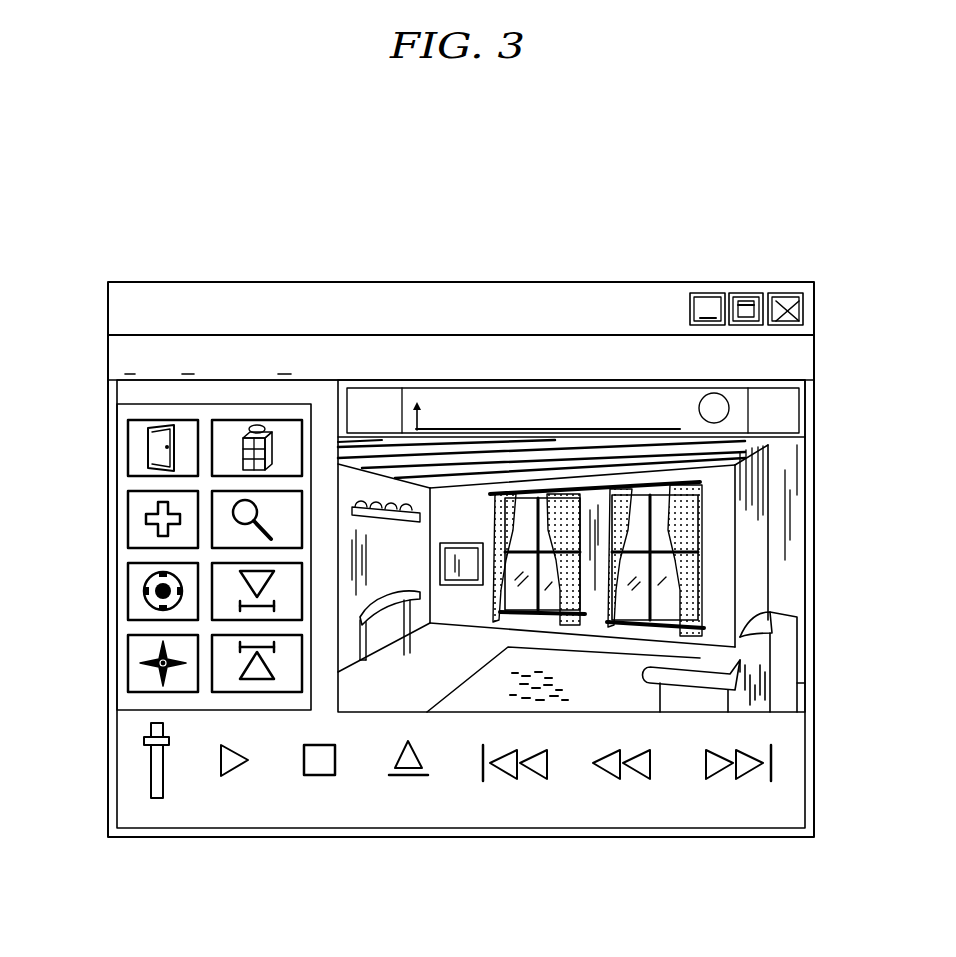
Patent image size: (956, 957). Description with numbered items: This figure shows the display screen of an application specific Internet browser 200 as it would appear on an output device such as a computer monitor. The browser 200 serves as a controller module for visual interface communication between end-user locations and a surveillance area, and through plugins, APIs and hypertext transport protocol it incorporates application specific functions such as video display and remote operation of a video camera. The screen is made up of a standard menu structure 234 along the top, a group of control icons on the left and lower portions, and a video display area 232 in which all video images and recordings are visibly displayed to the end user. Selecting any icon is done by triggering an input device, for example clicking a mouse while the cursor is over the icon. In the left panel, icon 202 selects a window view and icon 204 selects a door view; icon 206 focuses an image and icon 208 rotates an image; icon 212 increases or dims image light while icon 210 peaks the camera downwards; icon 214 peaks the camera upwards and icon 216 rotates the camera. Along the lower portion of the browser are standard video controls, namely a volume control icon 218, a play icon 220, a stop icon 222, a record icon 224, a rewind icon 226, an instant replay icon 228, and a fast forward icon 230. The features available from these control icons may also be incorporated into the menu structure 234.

The application specific Internet browser 200 is at (464, 232).
The window view icon 202 is at (228, 418).
The door view icon 204 is at (128, 432).
The focus icon 206 is at (228, 488).
The image rotate icon 208 is at (128, 503).
The camera peak downwards icon 210 is at (228, 560).
The image light icon 212 is at (128, 577).
The camera peak upwards icon 214 is at (228, 631).
The camera rotate icon 216 is at (128, 649).
The volume control icon 218 is at (154, 826).
The play icon 220 is at (235, 778).
The stop icon 222 is at (320, 777).
The record icon 224 is at (408, 777).
The rewind icon 226 is at (513, 782).
The instant replay icon 228 is at (627, 782).
The fast forward icon 230 is at (738, 782).
The video display area 232 is at (795, 582).
The menu structure 234 is at (292, 362).